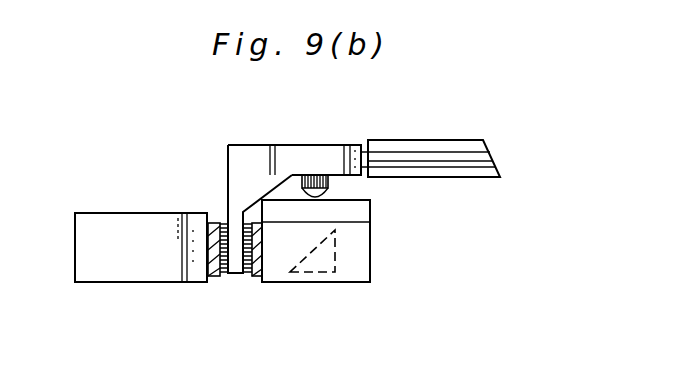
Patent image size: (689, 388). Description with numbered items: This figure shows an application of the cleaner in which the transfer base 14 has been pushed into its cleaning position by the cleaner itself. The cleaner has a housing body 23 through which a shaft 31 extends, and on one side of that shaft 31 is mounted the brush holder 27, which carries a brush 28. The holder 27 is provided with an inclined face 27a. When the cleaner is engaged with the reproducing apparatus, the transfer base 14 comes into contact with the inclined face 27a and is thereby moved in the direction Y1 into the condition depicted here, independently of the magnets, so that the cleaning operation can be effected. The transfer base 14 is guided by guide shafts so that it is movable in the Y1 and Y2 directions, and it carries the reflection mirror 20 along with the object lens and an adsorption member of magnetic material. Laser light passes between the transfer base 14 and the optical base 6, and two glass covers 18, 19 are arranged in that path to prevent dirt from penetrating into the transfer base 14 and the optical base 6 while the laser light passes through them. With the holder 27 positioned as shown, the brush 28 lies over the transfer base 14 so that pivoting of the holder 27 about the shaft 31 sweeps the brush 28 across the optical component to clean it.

The optical base 6 is at (153, 271).
The glass cover 19 is at (215, 276).
The glass cover 18 is at (254, 276).
The inclined face 27a is at (262, 199).
The brush holder 27 is at (311, 155).
The brush 28 is at (330, 186).
The transfer base 14 is at (343, 282).
The reflection mirror 20 is at (335, 257).
The housing body 23 is at (437, 140).
The shaft 31 is at (492, 152).